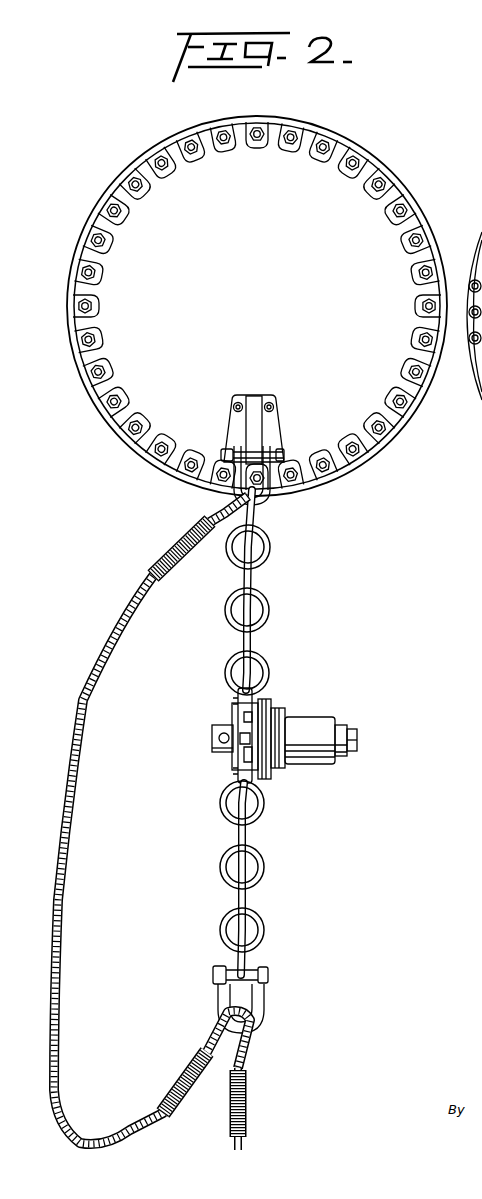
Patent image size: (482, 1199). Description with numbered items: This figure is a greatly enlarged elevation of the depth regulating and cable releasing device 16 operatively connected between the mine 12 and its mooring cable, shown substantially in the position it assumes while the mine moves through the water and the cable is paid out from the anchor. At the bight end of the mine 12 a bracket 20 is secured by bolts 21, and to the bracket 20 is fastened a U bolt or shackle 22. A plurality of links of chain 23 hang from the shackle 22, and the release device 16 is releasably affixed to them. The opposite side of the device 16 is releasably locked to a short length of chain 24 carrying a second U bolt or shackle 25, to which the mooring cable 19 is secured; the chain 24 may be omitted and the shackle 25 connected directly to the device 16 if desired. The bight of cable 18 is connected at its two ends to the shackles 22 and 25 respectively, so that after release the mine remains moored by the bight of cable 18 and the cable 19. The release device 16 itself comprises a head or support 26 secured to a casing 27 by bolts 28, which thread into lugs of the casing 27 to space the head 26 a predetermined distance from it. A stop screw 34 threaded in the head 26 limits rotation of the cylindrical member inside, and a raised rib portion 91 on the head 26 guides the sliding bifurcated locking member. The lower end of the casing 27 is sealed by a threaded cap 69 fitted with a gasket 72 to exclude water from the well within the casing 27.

The mine 12 is at (375, 161).
The depth regulating device 16 is at (313, 719).
The bight of cable 18 is at (128, 610).
The cable 19 is at (245, 1147).
The bracket 20 is at (270, 435).
The bolts 21 is at (266, 403).
The shackle 22 is at (272, 492).
The links of chain 23 is at (272, 621).
The short length of chain 24 is at (265, 868).
The shackle 25 is at (262, 1000).
The head 26 is at (232, 712).
The casing 27 is at (268, 712).
The bolts 28 is at (237, 700).
The stop screw 34 is at (212, 738).
The threaded cap 69 is at (358, 740).
The gasket 72 is at (344, 756).
The rib portion 91 is at (245, 740).